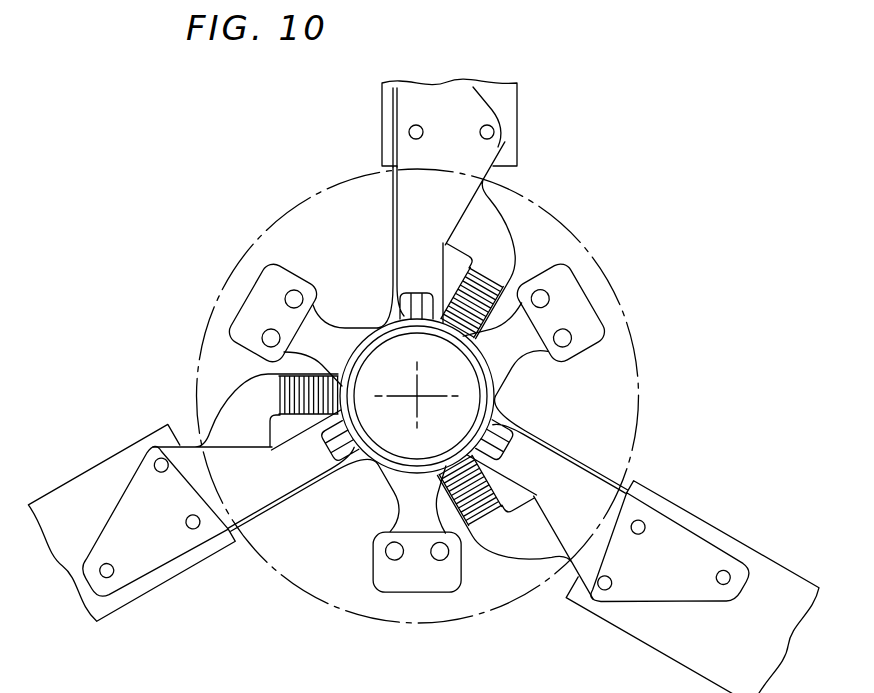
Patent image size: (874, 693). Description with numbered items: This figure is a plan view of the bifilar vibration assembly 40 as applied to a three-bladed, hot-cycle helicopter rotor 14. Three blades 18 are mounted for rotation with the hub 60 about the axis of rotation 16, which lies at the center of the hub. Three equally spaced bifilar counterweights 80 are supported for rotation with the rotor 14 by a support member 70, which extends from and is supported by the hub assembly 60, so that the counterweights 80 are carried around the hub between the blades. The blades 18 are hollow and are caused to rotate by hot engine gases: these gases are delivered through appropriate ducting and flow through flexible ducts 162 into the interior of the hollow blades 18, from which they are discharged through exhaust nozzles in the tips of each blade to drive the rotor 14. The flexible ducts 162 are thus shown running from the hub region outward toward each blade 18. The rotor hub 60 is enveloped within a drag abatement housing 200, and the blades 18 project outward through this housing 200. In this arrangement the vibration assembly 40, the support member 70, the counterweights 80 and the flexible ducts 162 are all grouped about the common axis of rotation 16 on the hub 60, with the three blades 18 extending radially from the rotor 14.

The rotor 14 is at (640, 211).
The axis of rotation 16 is at (418, 395).
The blades 18 is at (520, 106).
The bifilar vibration assembly 40 is at (345, 322).
The hub 60 is at (492, 397).
The support member 70 is at (540, 363).
The bifilar counterweights 80 is at (258, 293).
The flexible ducts 162 is at (500, 245).
The drag abatement housing 200 is at (645, 334).